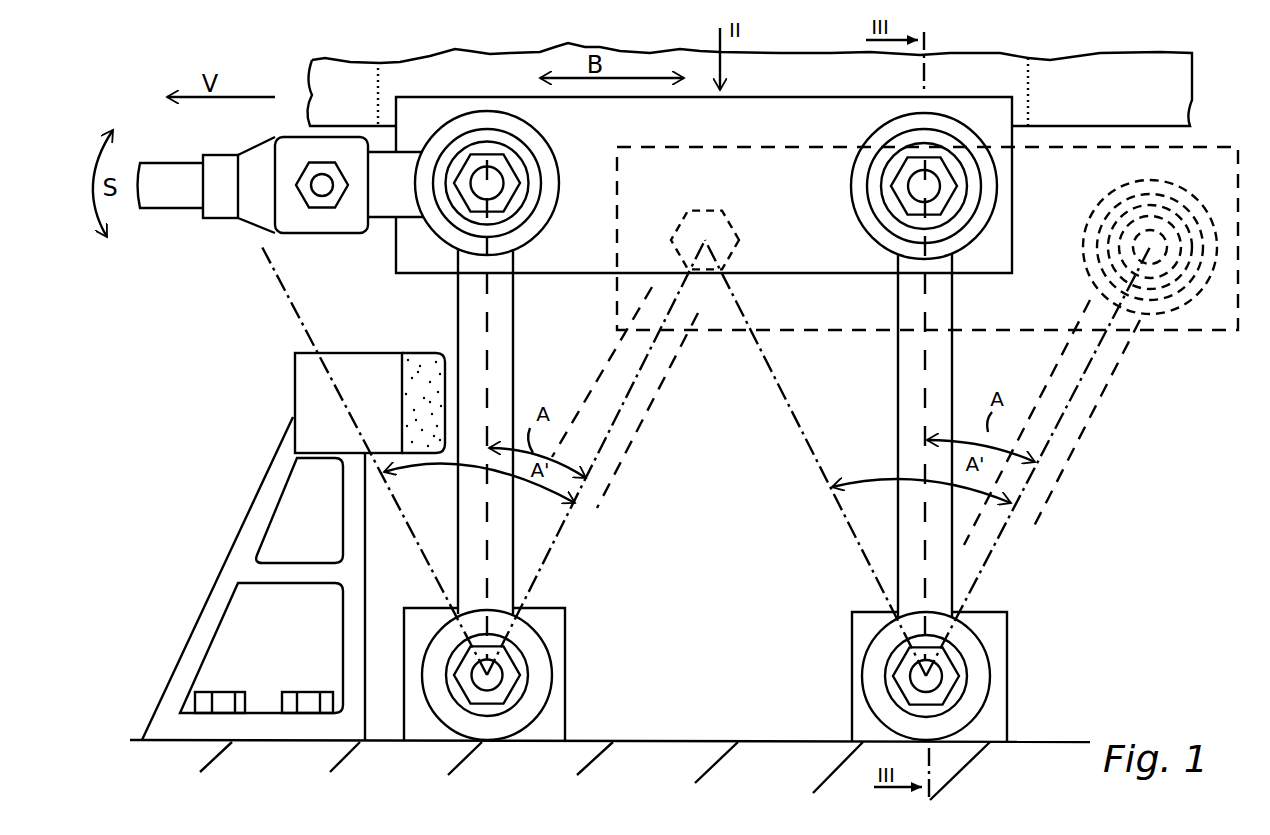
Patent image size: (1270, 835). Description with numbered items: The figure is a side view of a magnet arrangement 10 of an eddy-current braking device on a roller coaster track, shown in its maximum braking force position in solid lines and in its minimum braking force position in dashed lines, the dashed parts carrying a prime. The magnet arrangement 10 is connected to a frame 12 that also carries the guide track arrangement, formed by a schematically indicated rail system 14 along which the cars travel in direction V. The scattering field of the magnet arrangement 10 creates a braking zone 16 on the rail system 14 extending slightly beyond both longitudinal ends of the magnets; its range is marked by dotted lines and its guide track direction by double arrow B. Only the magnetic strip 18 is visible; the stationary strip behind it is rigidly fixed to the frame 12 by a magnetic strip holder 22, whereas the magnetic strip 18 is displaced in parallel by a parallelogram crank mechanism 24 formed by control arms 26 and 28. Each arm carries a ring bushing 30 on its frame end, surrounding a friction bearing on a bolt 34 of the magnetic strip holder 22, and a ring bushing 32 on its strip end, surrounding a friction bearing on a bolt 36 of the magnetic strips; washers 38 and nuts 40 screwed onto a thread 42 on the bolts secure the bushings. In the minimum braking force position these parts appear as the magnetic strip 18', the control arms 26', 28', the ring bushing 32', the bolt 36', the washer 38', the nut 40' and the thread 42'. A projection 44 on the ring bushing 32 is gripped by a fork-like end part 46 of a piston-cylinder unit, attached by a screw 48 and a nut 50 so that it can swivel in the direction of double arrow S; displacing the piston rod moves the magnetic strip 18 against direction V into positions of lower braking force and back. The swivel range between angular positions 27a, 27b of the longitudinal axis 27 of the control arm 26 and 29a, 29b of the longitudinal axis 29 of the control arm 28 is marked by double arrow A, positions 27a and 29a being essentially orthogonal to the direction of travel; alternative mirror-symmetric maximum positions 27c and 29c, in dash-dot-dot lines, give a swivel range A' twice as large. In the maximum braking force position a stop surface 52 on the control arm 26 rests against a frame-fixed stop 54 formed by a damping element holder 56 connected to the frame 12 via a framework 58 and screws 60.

The magnet arrangement 10 is at (356, 271).
The frame 12 is at (660, 757).
The rail system 14 is at (330, 80).
The braking zone 16 is at (980, 82).
The magnetic strip 18 is at (704, 212).
The magnetic strip in minimum braking force position 18' is at (927, 254).
The magnetic strip holder 22 is at (562, 612).
The parallelogram crank mechanism 24 is at (857, 438).
The control arm 26 is at (530, 537).
The control arm in minimum braking force position 26' is at (630, 397).
The longitudinal axis of the control arm 27 is at (480, 302).
The angular position of the longitudinal axis 27a is at (490, 408).
The angular position of the longitudinal axis 27b is at (627, 440).
The angular position of the longitudinal axis 27c is at (304, 312).
The control arm 28 is at (962, 553).
The control arm in minimum braking force position 28' is at (1053, 422).
The longitudinal axis of the control arm 29 is at (920, 300).
The angular position of the longitudinal axis 29a is at (930, 365).
The angular position of the longitudinal axis 29b is at (1100, 352).
The angular position of the longitudinal axis 29c is at (803, 397).
The ring bushing 30 is at (540, 665).
The ring bushing 32 is at (707, 174).
The ring bushing in minimum braking force position 32' is at (1169, 239).
The bolt 34 is at (495, 676).
The bolt 36 is at (706, 185).
The bolt in minimum braking force position 36' is at (1158, 253).
The washer 38 is at (673, 463).
The washer in minimum braking force position 38' is at (1166, 220).
The nut 40 is at (719, 454).
The nut in minimum braking force position 40' is at (915, 233).
The thread 42 is at (781, 417).
The thread in minimum braking force position 42' is at (1101, 238).
The projection 44 is at (382, 202).
The fork-like end part 46 is at (232, 228).
The screw 48 is at (322, 202).
The nut 50 is at (322, 182).
The stop surface 52 is at (452, 450).
The stop 54 is at (266, 407).
The damping element holder 56 is at (320, 417).
The framework 58 is at (227, 595).
The screws 60 is at (310, 695).